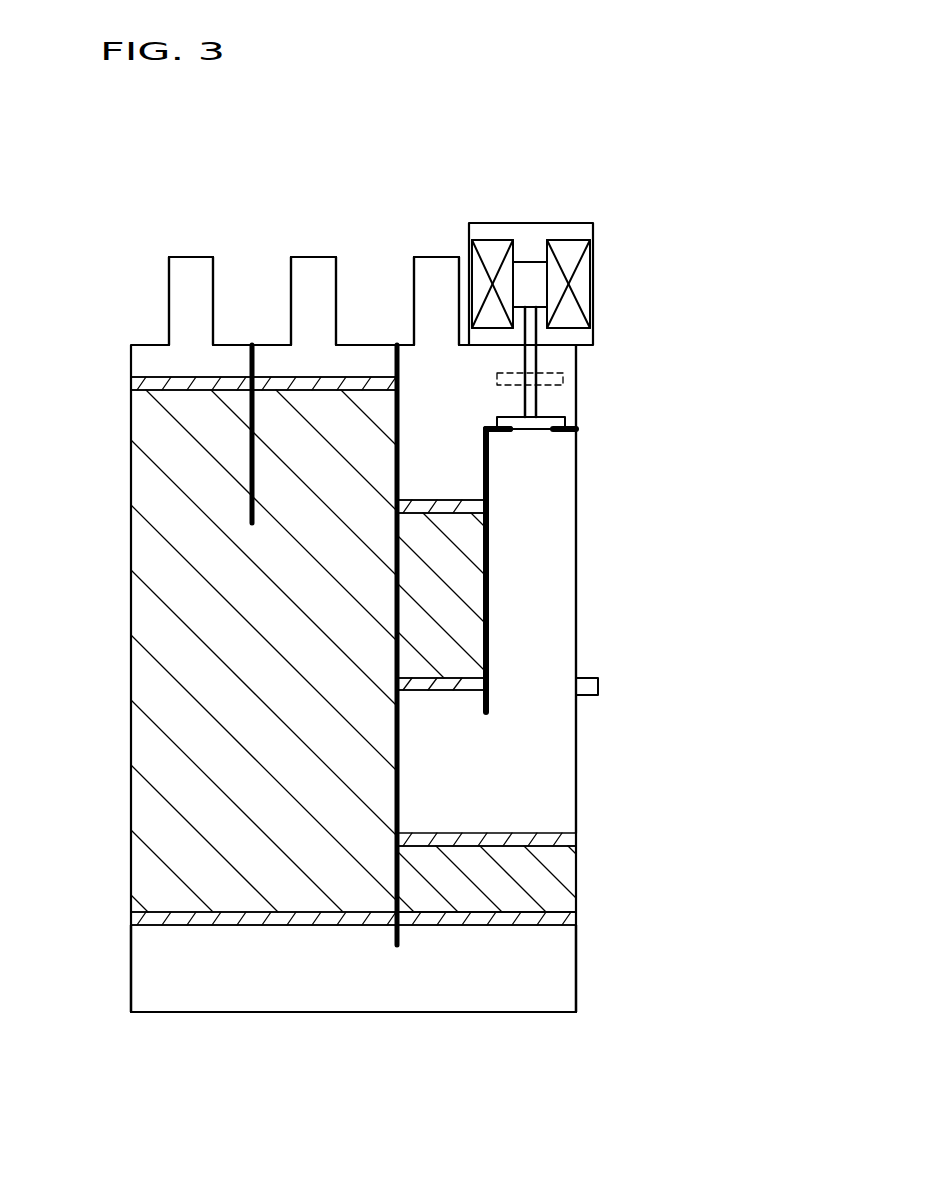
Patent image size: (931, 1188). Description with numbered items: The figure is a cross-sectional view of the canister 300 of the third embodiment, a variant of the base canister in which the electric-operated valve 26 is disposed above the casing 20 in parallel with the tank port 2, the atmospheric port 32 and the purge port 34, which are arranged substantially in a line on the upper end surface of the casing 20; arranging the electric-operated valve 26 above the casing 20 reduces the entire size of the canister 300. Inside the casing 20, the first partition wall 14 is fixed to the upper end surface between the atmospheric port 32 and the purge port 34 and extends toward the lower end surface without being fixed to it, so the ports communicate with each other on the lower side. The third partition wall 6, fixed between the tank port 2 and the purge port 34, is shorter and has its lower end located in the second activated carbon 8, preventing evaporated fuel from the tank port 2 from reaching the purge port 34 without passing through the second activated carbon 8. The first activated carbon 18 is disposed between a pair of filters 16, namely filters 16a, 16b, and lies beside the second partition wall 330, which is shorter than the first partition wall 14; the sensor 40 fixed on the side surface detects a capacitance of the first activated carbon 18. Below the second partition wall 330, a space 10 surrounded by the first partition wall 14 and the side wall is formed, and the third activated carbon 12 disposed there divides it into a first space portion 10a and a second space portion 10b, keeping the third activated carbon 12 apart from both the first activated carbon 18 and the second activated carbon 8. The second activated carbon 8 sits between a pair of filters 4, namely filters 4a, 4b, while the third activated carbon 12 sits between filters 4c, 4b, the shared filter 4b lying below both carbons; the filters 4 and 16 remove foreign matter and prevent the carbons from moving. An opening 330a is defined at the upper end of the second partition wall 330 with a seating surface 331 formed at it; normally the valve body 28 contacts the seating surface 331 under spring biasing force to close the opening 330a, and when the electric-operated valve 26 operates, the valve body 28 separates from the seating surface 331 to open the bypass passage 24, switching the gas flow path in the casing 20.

The canister 300 is at (462, 615).
The tank port 2 is at (167, 300).
The purge port 34 is at (289, 300).
The atmospheric port 32 is at (412, 300).
The electric-operated valve 26 is at (570, 223).
The seating surface 331 is at (556, 425).
The opening 330a is at (513, 418).
The second partition wall 330 is at (520, 327).
The valve body 28 is at (563, 379).
The bypass passage 24 is at (565, 528).
The casing 20 is at (578, 572).
The first activated carbon 18 is at (470, 640).
The filters 16 is at (441, 595).
The filter 16a is at (490, 508).
The filter 16b is at (490, 685).
The sensor 40 is at (598, 690).
The first partition wall 14 is at (400, 725).
The third partition wall 6 is at (250, 470).
The filters 4 is at (353, 651).
The filter 4a is at (133, 383).
The second activated carbon 8 is at (142, 546).
The space 10 is at (353, 968).
The first space portion 10a is at (565, 795).
The filter 4c is at (563, 838).
The third activated carbon 12 is at (565, 884).
The shared filter 4b is at (565, 917).
The second space portion 10b is at (563, 974).